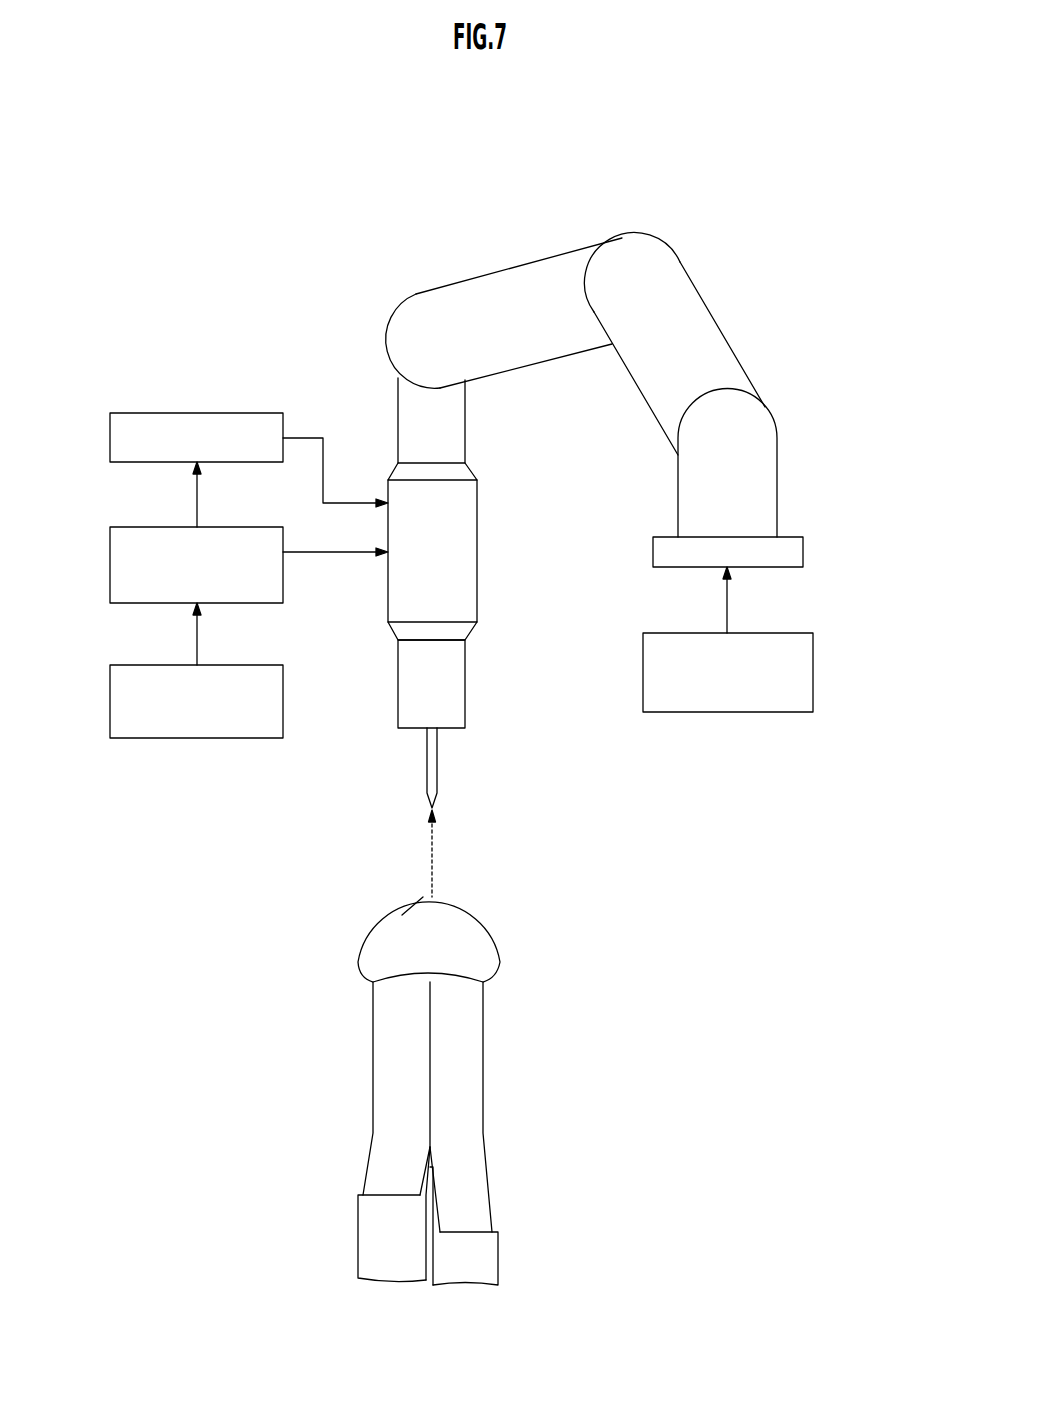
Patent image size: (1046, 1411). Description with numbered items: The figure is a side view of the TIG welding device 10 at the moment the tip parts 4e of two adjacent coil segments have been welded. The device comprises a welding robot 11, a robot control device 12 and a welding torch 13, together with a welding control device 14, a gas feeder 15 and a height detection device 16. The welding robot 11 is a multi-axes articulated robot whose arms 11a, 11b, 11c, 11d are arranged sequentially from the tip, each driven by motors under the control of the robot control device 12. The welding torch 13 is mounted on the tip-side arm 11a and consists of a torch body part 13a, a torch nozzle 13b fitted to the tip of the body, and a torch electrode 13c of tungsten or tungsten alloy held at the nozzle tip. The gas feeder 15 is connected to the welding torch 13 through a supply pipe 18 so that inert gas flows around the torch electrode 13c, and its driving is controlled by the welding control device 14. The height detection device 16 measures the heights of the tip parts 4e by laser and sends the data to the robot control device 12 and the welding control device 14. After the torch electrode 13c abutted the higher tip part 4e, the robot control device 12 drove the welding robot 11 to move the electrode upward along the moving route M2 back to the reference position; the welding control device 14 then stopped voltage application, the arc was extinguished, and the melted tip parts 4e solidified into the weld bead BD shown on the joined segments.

The TIG welding device 10 is at (601, 207).
The welding robot 11 is at (695, 253).
The arm 11a is at (450, 430).
The arm 11b is at (504, 297).
The arm 11c is at (713, 358).
The arm 11d is at (753, 481).
The robot control device 12 is at (813, 667).
The welding torch 13 is at (497, 523).
The torch body part 13a is at (467, 563).
The torch nozzle 13b is at (452, 686).
The torch electrode 13c is at (438, 758).
The welding control device 14 is at (110, 551).
The gas feeder 15 is at (110, 438).
The height detection device 16 is at (110, 691).
The supply pipe 18 is at (307, 438).
The moving route M2 is at (432, 878).
The weld bead BD is at (483, 952).
The tip part 4e is at (470, 1033).